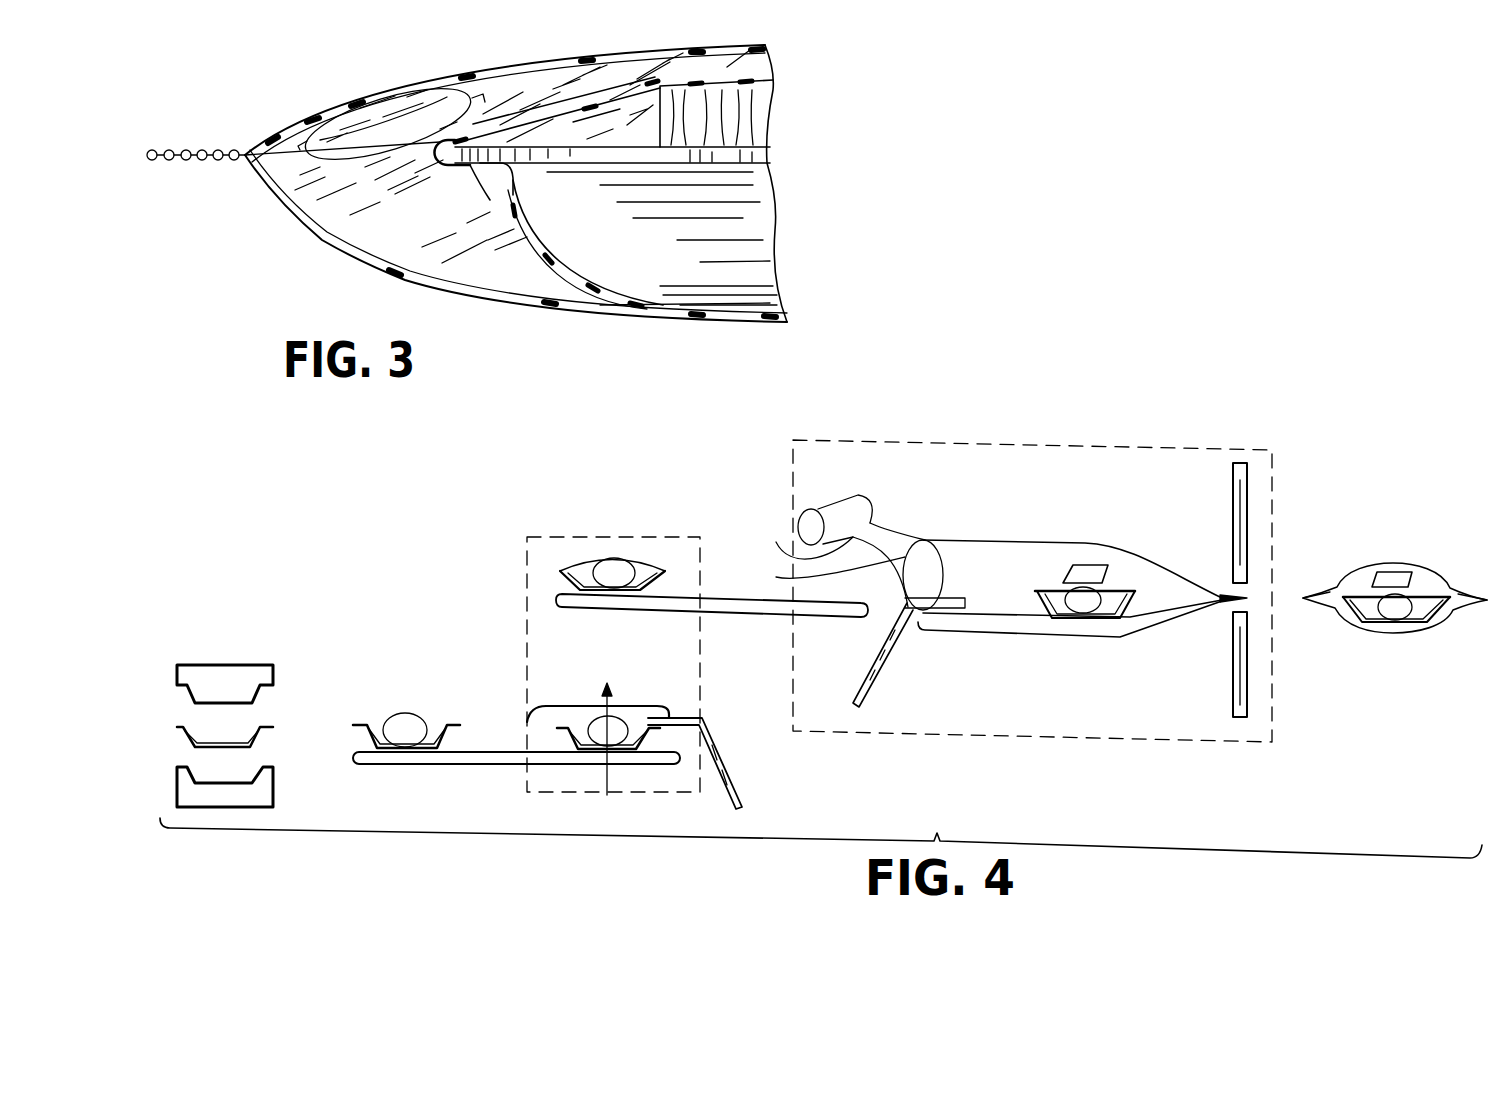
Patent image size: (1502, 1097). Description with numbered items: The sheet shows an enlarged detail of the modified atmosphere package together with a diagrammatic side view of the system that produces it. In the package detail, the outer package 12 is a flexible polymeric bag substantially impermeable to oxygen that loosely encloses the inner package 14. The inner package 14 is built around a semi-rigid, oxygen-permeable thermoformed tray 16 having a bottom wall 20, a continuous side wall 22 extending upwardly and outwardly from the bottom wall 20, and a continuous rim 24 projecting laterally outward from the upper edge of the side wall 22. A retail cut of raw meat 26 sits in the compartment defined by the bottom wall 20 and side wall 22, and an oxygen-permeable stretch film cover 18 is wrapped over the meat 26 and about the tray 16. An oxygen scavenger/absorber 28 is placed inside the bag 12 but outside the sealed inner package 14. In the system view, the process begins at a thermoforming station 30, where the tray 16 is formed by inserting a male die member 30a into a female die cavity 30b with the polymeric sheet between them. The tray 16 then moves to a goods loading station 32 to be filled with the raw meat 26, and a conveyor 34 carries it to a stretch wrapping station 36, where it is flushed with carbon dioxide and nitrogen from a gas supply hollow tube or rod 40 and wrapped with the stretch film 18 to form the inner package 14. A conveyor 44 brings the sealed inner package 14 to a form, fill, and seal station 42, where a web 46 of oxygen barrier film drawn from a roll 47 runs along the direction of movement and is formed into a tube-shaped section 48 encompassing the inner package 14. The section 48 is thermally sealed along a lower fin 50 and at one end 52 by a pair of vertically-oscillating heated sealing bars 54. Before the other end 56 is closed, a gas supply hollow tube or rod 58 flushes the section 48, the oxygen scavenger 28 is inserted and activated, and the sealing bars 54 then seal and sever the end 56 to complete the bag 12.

In FIG. 3, the outer package 12 is at (305, 227).
In FIG. 4, the outer package 12 is at (1458, 620).
In FIG. 4, the inner package 14 is at (558, 567).
In FIG. 4, the tray 16 is at (268, 732).
In FIG. 3, the cover 18 is at (752, 73).
In FIG. 4, the cover 18 is at (643, 705).
In FIG. 3, the bottom wall 20 is at (777, 303).
In FIG. 3, the continuous side wall 22 is at (547, 268).
In FIG. 3, the continuous rim 24 is at (473, 163).
In FIG. 3, the retail cut of raw meat 26 is at (770, 120).
In FIG. 4, the retail cut of raw meat 26 is at (410, 717).
In FIG. 3, the oxygen scavenger/absorber 28 is at (397, 100).
In FIG. 4, the oxygen scavenger/absorber 28 is at (1092, 575).
In FIG. 4, the thermoforming station 30 is at (260, 690).
In FIG. 4, the male die member 30a is at (272, 670).
In FIG. 4, the female die cavity 30b is at (272, 783).
In FIG. 4, the goods loading station 32 is at (428, 638).
In FIG. 4, the conveyor 34 is at (495, 764).
In FIG. 4, the stretch wrapping station 36 is at (620, 534).
In FIG. 4, the gas supply hollow tube or rod 40 is at (745, 800).
In FIG. 4, the form, fill, and seal station 42 is at (1059, 437).
In FIG. 4, the conveyor 44 is at (785, 607).
In FIG. 4, the web 46 is at (835, 561).
In FIG. 4, the roll 47 is at (820, 509).
In FIG. 4, the tube-shaped section of the web 48 is at (1040, 545).
In FIG. 4, the lower fin 50 is at (1083, 630).
In FIG. 4, the end of the tube-shaped section 52 is at (1225, 603).
In FIG. 4, the heated sealing bars 54 is at (1248, 545).
In FIG. 4, the other end of the tube-shaped web section 56 is at (828, 571).
In FIG. 4, the gas supply hollow tube or rod 58 is at (878, 672).